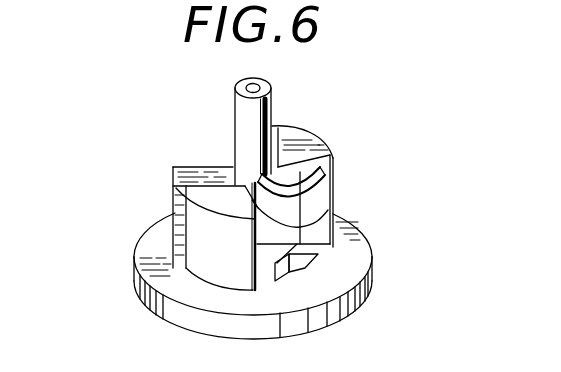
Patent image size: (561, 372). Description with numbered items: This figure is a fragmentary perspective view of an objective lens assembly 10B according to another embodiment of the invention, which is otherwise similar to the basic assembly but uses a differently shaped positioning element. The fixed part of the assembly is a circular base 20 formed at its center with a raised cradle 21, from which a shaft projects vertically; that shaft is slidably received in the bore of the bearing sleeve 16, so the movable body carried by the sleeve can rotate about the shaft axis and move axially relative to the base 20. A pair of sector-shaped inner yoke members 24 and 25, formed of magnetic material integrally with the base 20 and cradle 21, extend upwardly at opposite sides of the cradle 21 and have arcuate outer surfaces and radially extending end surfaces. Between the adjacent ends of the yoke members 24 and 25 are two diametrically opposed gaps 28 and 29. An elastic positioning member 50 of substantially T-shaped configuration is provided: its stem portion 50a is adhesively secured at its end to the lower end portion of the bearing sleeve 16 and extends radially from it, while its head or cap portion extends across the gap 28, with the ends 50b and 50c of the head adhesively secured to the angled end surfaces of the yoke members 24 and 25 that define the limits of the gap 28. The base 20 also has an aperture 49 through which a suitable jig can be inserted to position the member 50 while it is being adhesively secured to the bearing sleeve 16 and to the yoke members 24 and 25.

The objective lens assembly 10B is at (338, 132).
The bearing sleeve 16 is at (243, 116).
The base 20 is at (168, 311).
The cradle 21 is at (257, 258).
The inner yoke member 24 is at (188, 213).
The inner yoke member 25 is at (296, 128).
The gap 28 is at (333, 180).
The gap 29 is at (187, 167).
The aperture 49 is at (318, 266).
The elastic positioning member 50 is at (336, 212).
The stem portion 50a is at (256, 184).
The end of head portion 50b is at (215, 236).
The end of head portion 50c is at (325, 162).